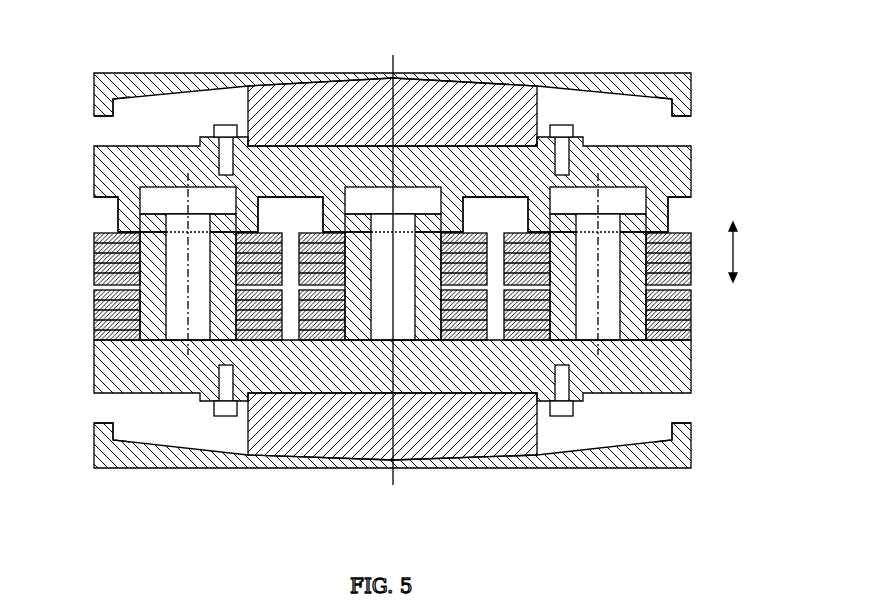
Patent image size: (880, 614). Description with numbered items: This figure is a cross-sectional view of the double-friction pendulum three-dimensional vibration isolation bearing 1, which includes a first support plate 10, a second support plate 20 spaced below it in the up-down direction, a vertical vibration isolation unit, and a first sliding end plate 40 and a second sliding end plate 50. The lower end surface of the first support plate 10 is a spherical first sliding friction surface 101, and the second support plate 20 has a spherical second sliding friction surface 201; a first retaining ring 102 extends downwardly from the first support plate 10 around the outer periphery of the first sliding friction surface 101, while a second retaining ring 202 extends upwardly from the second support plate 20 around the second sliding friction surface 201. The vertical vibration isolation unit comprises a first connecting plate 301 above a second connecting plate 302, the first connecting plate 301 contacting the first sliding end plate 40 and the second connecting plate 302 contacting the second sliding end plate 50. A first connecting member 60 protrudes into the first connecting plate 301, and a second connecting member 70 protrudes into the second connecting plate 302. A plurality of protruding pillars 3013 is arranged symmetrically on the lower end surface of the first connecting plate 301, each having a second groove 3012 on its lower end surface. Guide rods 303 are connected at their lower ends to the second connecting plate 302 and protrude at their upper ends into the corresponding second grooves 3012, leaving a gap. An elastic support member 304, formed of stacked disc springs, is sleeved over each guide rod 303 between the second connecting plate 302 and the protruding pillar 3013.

The double-friction pendulum three-dimensional vibration isolation bearing 1 is at (68, 46).
The first support plate 10 is at (203, 78).
The first sliding friction surface 101 is at (563, 73).
The first retaining ring 102 is at (95, 104).
The second support plate 20 is at (173, 450).
The second sliding friction surface 201 is at (613, 450).
The second retaining ring 202 is at (95, 424).
The first sliding end plate 40 is at (332, 128).
The second sliding end plate 50 is at (342, 418).
The first connecting member 60 is at (574, 128).
The second connecting member 70 is at (573, 407).
The first connecting plate 301 is at (97, 152).
The second groove 3012 is at (142, 190).
The protruding pillar 3013 is at (126, 212).
The second connecting plate 302 is at (127, 362).
The guide rod 303 is at (105, 312).
The elastic support member 304 is at (100, 277).